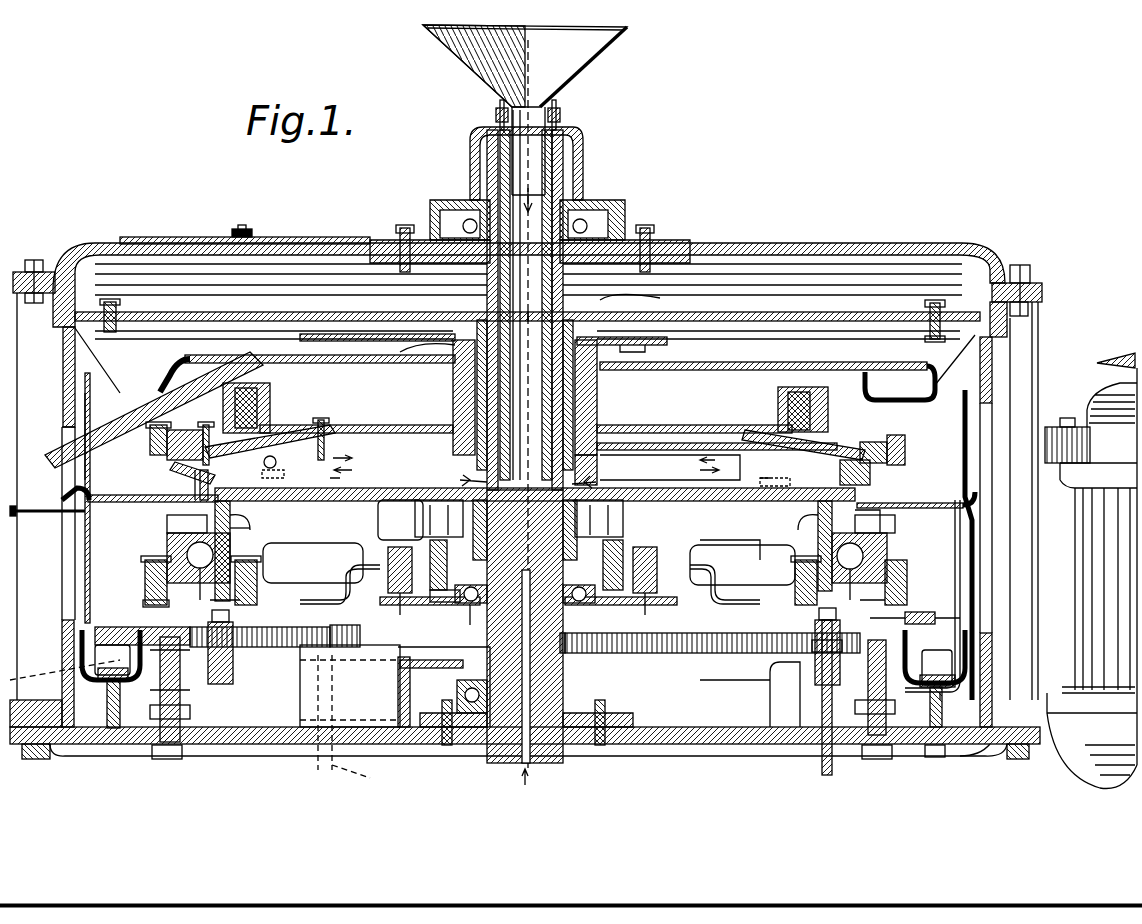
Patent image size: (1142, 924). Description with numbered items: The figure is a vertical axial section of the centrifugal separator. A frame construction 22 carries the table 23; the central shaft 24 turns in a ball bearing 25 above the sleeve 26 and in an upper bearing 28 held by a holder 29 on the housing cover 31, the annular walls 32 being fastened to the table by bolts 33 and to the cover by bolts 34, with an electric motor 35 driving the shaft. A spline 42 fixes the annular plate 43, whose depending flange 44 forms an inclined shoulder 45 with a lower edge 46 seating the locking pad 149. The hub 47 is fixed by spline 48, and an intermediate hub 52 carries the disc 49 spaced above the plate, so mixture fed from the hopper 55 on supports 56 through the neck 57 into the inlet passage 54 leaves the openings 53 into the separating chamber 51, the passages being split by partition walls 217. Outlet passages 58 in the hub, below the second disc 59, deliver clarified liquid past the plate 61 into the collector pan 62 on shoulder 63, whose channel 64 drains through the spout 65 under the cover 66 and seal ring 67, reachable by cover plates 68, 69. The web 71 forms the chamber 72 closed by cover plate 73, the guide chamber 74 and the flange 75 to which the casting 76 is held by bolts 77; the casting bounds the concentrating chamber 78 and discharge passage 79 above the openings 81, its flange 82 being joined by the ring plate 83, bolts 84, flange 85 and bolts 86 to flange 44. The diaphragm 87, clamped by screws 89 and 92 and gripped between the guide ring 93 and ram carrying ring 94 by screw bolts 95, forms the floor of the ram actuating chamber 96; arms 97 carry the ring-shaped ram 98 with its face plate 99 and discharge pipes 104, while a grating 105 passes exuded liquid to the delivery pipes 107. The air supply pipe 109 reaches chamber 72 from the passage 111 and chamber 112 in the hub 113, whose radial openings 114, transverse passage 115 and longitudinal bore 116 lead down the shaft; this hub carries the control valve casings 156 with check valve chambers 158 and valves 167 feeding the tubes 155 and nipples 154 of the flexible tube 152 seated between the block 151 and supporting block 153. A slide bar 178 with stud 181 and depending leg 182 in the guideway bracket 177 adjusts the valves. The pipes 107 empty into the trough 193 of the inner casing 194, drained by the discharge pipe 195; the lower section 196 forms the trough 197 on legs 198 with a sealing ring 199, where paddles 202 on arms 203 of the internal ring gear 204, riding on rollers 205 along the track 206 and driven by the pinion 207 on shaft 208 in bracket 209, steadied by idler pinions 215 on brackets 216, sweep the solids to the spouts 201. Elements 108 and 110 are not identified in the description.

The frame construction 22 is at (975, 760).
The table 23 is at (685, 745).
The central shaft 24 is at (545, 763).
The bearing 25 is at (595, 696).
The sleeve 26 is at (600, 763).
The bearing 28 is at (625, 228).
The holder 29 is at (422, 233).
The housing cover 31 is at (770, 255).
The annular vertical walls 32 is at (1040, 366).
The bolts 33 is at (36, 760).
The bolts 34 is at (36, 260).
The electric motor 35 is at (1075, 568).
The key or spline 42 is at (400, 516).
The annular plate 43 is at (705, 540).
The depending flange 44 is at (263, 552).
The inclined ledge or shoulder 45 is at (818, 517).
The lower edge of shoulder 46 is at (232, 512).
The hub 47 is at (520, 318).
The spline 48 is at (498, 340).
The annular disc 49 is at (670, 466).
The separating chamber 51 is at (538, 474).
The intermediate hub 52 is at (592, 468).
The ports or openings 53 is at (525, 478).
The inlet passage 54 is at (527, 295).
The funnel-shaped hopper 55 is at (478, 73).
The supports 56 is at (583, 153).
The neck 57 is at (575, 125).
The outlet passages 58 is at (510, 380).
The second annular disc or plate 59 is at (690, 428).
The disc or plate 61 is at (668, 343).
The collector pan 62 is at (790, 368).
The internal annular shoulder 63 is at (993, 346).
The collecting channel 64 is at (898, 396).
The spouts 65 is at (52, 448).
The cover 66 is at (835, 313).
The seal ring 67 is at (932, 316).
The cover plate 68 is at (312, 312).
The cover plate 69 is at (280, 243).
The web 71 is at (345, 425).
The chamber 72 is at (433, 397).
The cover plate 73 is at (370, 341).
The guide chamber 74 is at (240, 383).
The marginal flange 75 is at (175, 430).
The casting 76 is at (180, 478).
The bolts 77 is at (150, 448).
The concentrating chamber 78 is at (200, 488).
The discharge passage 79 is at (885, 530).
The ports or openings 81 is at (167, 522).
The peripheral flange 82 is at (146, 576).
The ring plate 83 is at (154, 625).
The bolts 84 is at (145, 597).
The flange 85 is at (258, 566).
The bolts 86 is at (795, 565).
The diaphragm 87 is at (280, 436).
The screws 89 is at (321, 420).
The screws 92 is at (206, 425).
The guide ring 93 is at (250, 388).
The ram carrying ring 94 is at (281, 462).
The screw bolts 95 is at (280, 478).
The ram actuating chamber 96 is at (760, 443).
The arms 97 is at (835, 448).
The ram 98 is at (870, 475).
The face plate 99 is at (870, 485).
The curved discharge pipe 104 is at (778, 483).
The screen or grating 105 is at (185, 470).
The delivery pipes 107 is at (110, 490).
The bearing block 108 is at (778, 405).
The air supply pipe 109 is at (619, 397).
The stem 110 is at (471, 617).
The passage 111 is at (640, 505).
The chamber 112 is at (452, 520).
The hub 113 is at (621, 612).
The radial openings 114 is at (591, 520).
The transverse passage 115 is at (591, 514).
The longitudinal bore 116 is at (507, 679).
The locking pad 149 is at (251, 523).
The block 151 is at (233, 556).
The annular flexible tube 152 is at (167, 540).
The supporting block 153 is at (200, 590).
The nipples 154 is at (868, 598).
The tubes 155 is at (300, 630).
The control valve casings 156 is at (375, 545).
The check valve chambers 158 is at (510, 612).
The valves 167 is at (400, 547).
The guideway bracket 177 is at (420, 680).
The slide bar 178 is at (430, 668).
The stud 181 is at (444, 607).
The depending leg 182 is at (350, 722).
The stationary trough 193 is at (72, 492).
The inner stationary casing 194 is at (970, 466).
The discharge pipes 195 is at (40, 514).
The lower section 196 is at (962, 612).
The trough or channel 197 is at (962, 680).
The legs or standards 198 is at (140, 700).
The sealing ring 199 is at (85, 585).
The discharge spouts 201 is at (65, 693).
The paddles or blades 202 is at (82, 650).
The arms 203 is at (915, 609).
The internal ring gear 204 is at (589, 628).
The rollers 205 is at (522, 714).
The track 206 is at (167, 760).
The pinion 207 is at (815, 635).
The shaft 208 is at (822, 770).
The bracket 209 is at (750, 694).
The idler pinions 215 is at (233, 640).
The brackets 216 is at (262, 693).
The vertical partition walls 217 is at (531, 462).